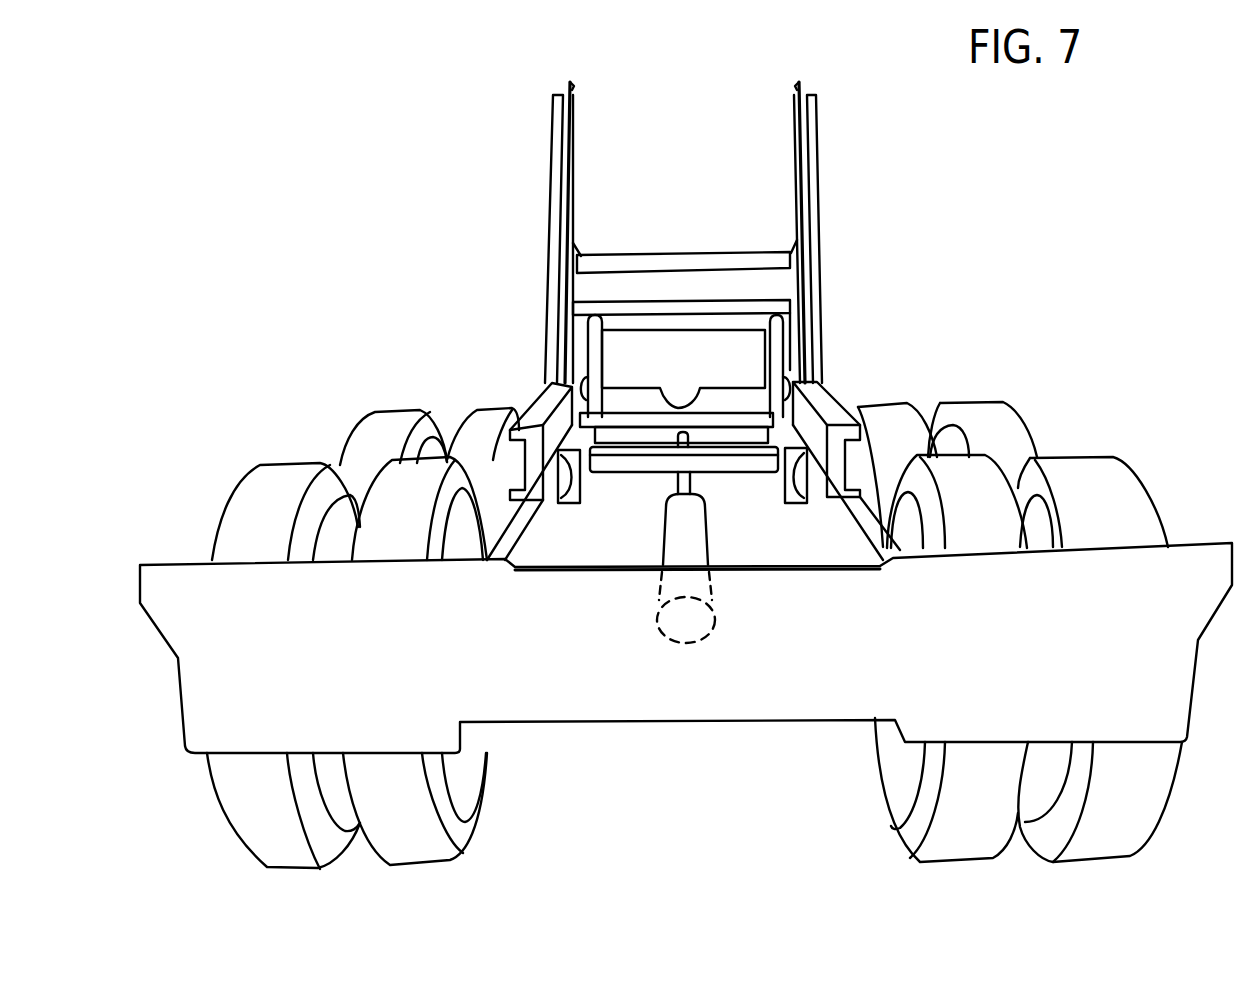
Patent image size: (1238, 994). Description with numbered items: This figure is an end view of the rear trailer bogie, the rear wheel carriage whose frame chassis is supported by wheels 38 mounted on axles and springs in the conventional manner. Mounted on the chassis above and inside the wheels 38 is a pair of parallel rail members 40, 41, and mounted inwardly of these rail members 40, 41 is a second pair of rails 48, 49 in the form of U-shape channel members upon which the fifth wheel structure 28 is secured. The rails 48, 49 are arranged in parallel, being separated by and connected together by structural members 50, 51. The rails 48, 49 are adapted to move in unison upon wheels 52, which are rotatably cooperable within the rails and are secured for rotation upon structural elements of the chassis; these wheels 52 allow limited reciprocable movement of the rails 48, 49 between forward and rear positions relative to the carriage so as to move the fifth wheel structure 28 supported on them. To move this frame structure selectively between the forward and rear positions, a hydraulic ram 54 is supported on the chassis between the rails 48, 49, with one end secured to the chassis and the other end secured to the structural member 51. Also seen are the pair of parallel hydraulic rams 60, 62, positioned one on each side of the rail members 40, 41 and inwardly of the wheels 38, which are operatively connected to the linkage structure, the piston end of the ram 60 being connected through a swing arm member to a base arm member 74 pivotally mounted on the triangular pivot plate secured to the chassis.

The fifth wheel structure 28 is at (707, 408).
The wheels 38 is at (347, 449).
The rail member 40 is at (527, 412).
The rail member 41 is at (833, 408).
The rail 48 is at (598, 392).
The rail 49 is at (822, 370).
The structural member 50 is at (641, 442).
The structural member 51 is at (733, 432).
The wheels 52 is at (568, 497).
The hydraulic ram 54 is at (706, 534).
The hydraulic ram 60 is at (573, 222).
The hydraulic ram 62 is at (797, 213).
The base arm member 74 is at (553, 210).